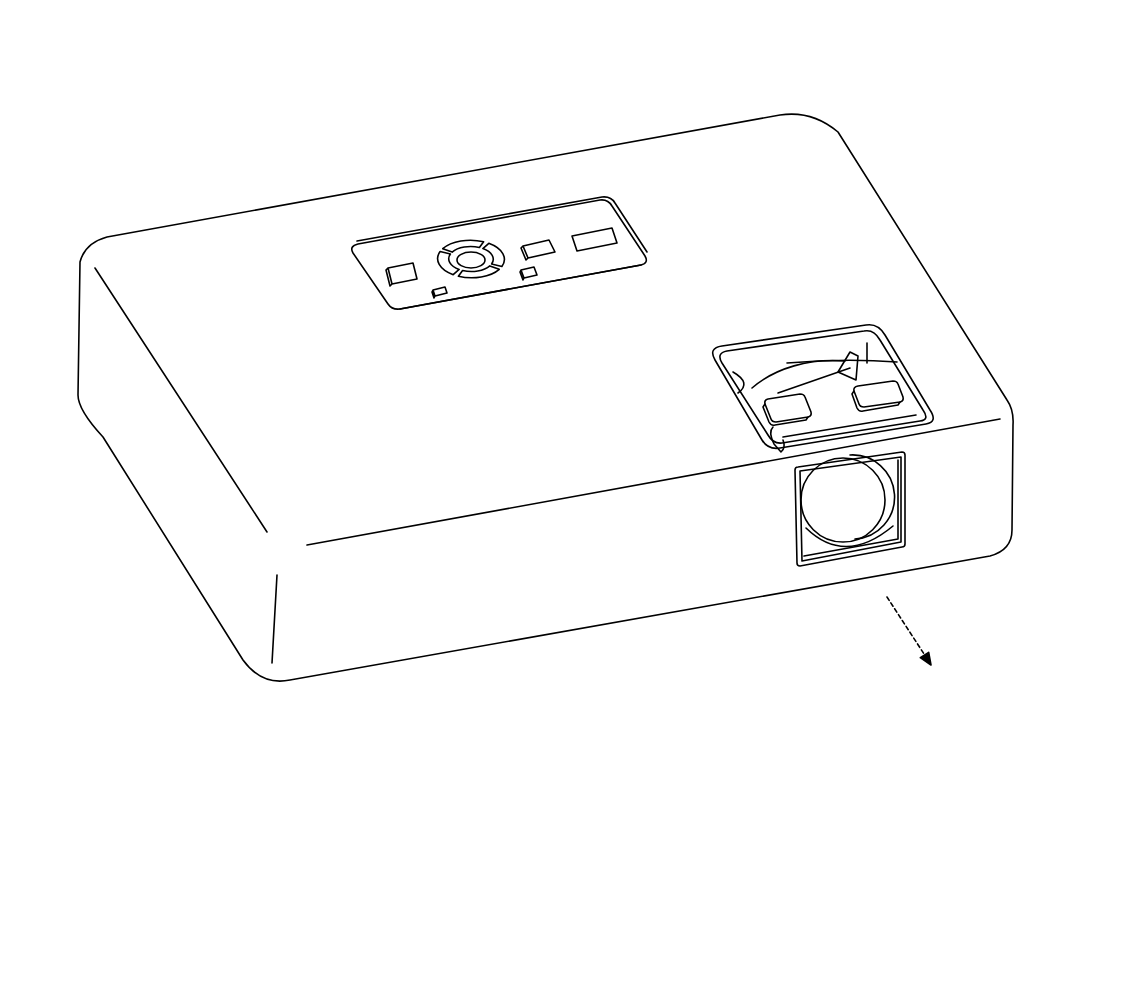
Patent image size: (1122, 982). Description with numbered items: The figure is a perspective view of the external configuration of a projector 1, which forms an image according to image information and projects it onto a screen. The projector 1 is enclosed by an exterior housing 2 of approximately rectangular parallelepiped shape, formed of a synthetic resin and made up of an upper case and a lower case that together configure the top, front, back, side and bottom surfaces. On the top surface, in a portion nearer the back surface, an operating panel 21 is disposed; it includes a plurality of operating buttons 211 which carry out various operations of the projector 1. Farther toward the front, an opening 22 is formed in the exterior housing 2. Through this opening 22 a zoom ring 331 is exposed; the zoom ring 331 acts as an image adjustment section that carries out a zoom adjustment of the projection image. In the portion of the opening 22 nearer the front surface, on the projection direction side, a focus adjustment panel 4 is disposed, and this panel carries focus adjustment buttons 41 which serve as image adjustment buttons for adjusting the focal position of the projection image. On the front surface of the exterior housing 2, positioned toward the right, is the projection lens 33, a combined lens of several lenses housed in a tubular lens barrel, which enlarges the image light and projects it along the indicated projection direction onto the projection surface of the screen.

The projector 1 is at (600, 100).
The exterior housing 2 is at (838, 198).
The operating panel 21 is at (604, 218).
The operating buttons 211 is at (503, 283).
The opening 22 is at (747, 386).
The zoom ring 331 is at (790, 372).
The focus adjustment buttons 41 is at (877, 392).
The focus adjustment panel 4 is at (833, 403).
The projection lens 33 is at (865, 500).